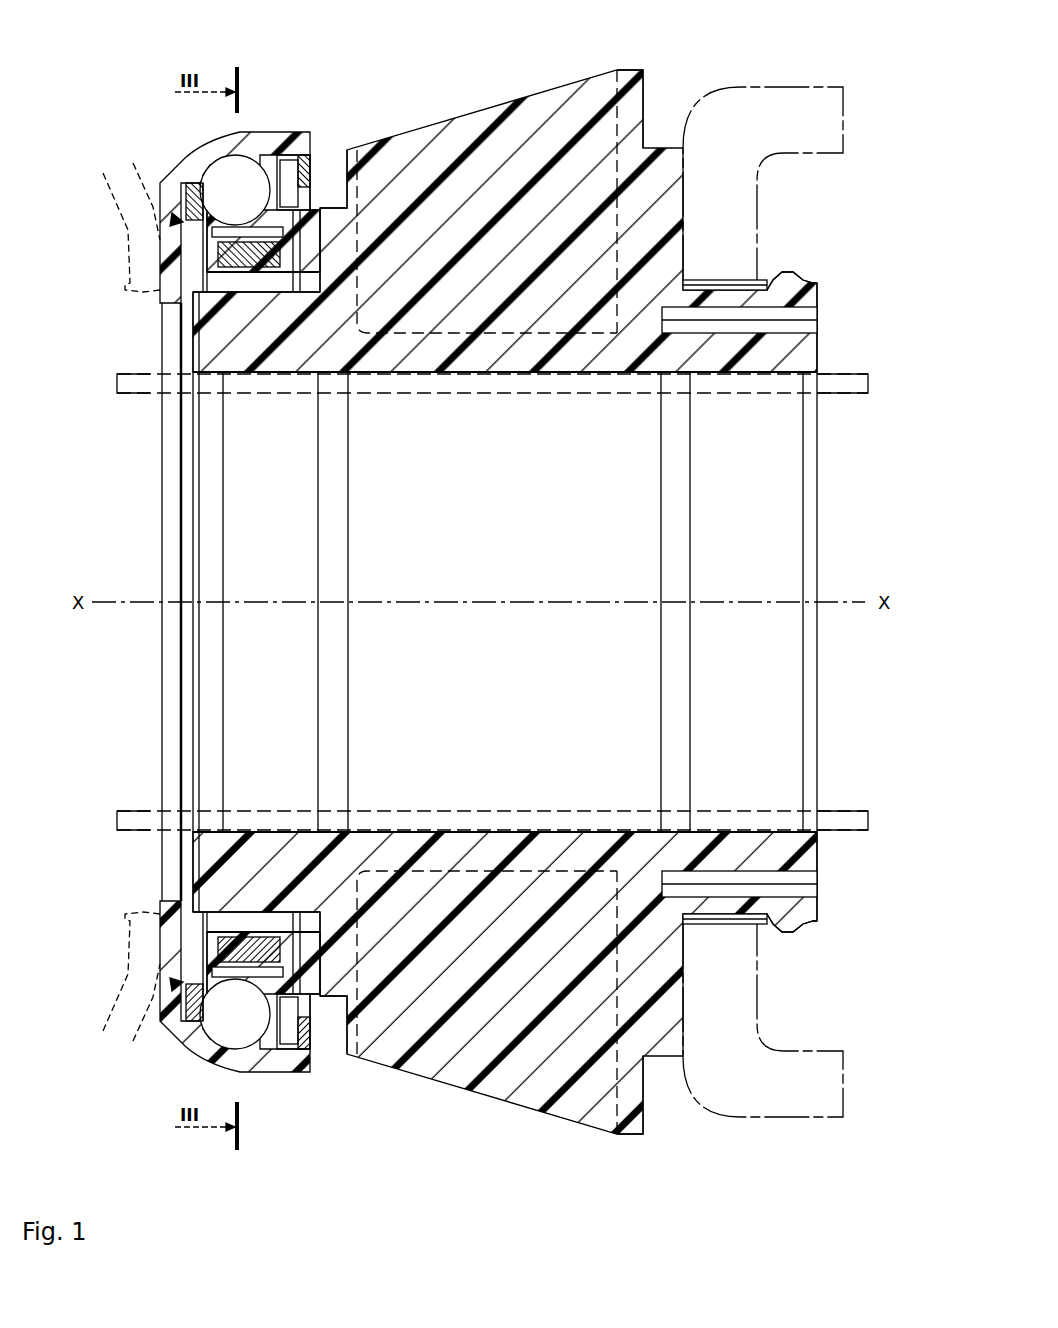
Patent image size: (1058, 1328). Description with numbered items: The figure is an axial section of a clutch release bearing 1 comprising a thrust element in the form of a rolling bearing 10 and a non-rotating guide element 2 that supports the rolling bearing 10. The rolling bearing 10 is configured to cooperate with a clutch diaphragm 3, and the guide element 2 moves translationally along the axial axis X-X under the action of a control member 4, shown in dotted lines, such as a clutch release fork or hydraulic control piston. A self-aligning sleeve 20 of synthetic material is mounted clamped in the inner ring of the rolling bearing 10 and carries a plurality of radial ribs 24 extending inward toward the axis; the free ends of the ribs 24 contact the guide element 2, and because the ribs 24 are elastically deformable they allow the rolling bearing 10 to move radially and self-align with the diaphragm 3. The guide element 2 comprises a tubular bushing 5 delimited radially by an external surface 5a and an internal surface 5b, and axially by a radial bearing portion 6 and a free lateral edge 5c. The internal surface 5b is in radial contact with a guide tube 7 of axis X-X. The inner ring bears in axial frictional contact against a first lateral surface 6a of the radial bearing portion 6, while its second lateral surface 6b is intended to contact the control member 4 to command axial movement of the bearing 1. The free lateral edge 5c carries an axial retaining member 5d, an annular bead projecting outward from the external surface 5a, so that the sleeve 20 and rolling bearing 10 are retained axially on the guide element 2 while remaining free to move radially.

The clutch release bearing 1 is at (389, 66).
The guide element 2 is at (828, 362).
The clutch diaphragm 3 is at (128, 230).
The control member 4 is at (825, 128).
The bushing 5 is at (200, 377).
The external surface 5a is at (200, 318).
The internal surface 5b is at (370, 378).
The free lateral edge 5c is at (200, 354).
The axial retaining member 5d is at (190, 300).
The radial bearing portion 6 is at (468, 113).
The first lateral surface 6a is at (322, 206).
The second lateral surface 6b is at (646, 86).
The guide tube 7 is at (870, 383).
The rolling bearing 10 is at (263, 131).
The self-aligning sleeve 20 is at (160, 277).
The radial ribs 24 is at (283, 170).